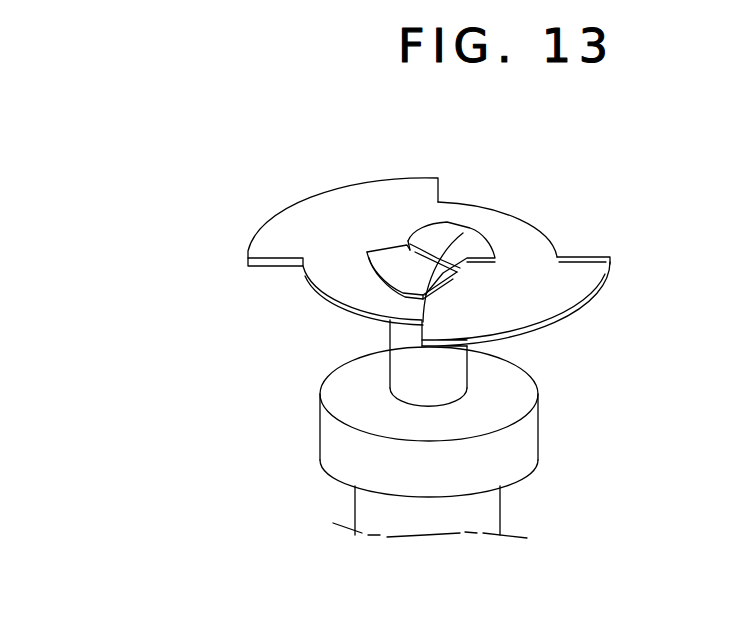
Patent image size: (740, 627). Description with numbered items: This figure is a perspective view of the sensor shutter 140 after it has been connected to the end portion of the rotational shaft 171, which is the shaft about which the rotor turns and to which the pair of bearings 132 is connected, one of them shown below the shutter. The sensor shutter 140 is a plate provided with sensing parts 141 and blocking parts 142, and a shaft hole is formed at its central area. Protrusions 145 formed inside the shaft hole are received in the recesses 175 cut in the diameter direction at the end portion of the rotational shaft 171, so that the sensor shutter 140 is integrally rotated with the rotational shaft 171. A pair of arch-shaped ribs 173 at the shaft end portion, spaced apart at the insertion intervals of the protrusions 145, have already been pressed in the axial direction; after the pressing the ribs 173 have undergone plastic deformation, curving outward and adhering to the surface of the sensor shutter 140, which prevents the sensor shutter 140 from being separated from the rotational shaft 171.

The sensor shutter 140 is at (118, 254).
The sensing parts 141 is at (326, 298).
The blocking parts 142 is at (257, 245).
The protrusions 145 is at (450, 270).
The ribs 173 is at (438, 238).
The recesses 175 is at (463, 233).
The bearings 132 is at (324, 430).
The rotational shaft 171 is at (345, 507).